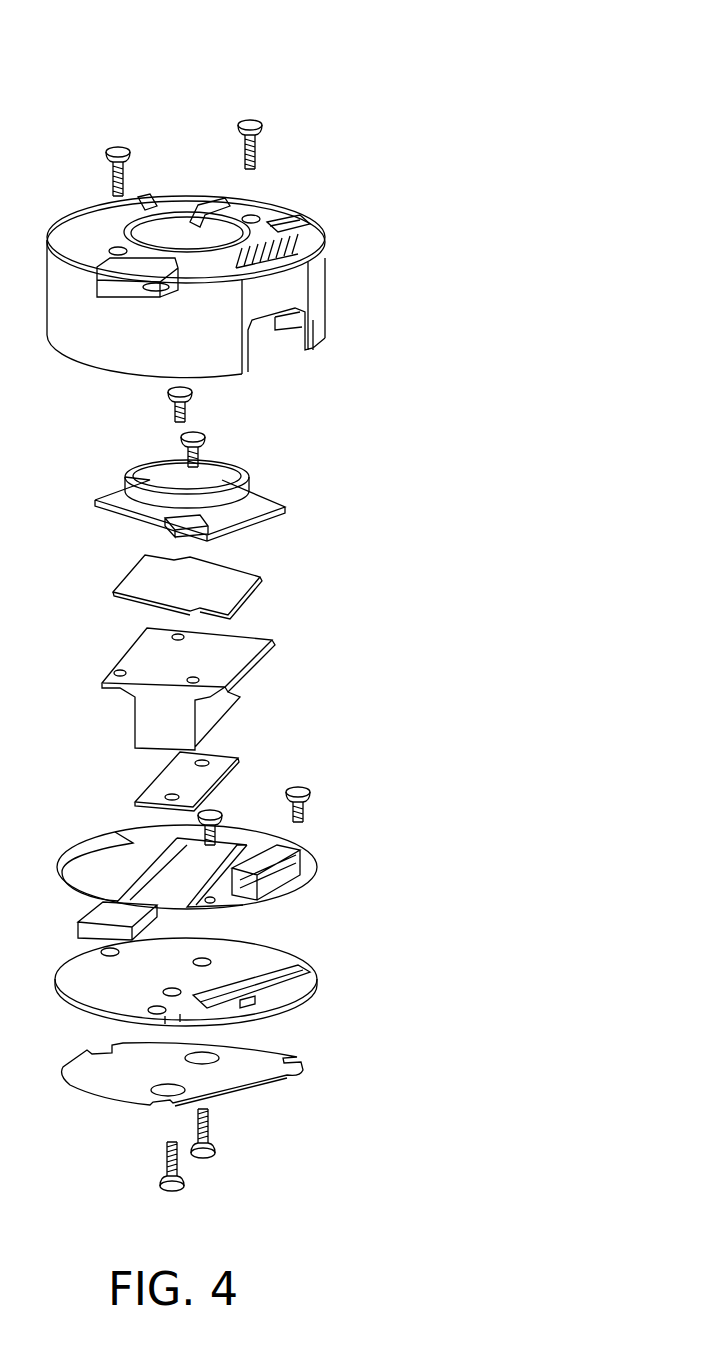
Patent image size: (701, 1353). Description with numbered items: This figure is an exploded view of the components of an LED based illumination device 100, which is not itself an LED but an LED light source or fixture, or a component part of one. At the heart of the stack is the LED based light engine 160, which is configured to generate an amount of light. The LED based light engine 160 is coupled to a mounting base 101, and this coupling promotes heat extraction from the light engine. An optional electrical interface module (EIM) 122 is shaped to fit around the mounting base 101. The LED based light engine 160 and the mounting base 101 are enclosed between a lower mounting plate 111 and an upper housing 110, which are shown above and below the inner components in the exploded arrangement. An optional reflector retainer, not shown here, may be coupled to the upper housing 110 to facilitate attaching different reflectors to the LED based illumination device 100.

The LED based illumination device 100 is at (430, 74).
The upper housing 110 is at (320, 273).
The LED based light engine 160 is at (245, 468).
The mounting base 101 is at (250, 645).
The electrical interface module (EIM) 122 is at (310, 865).
The lower mounting plate 111 is at (313, 978).